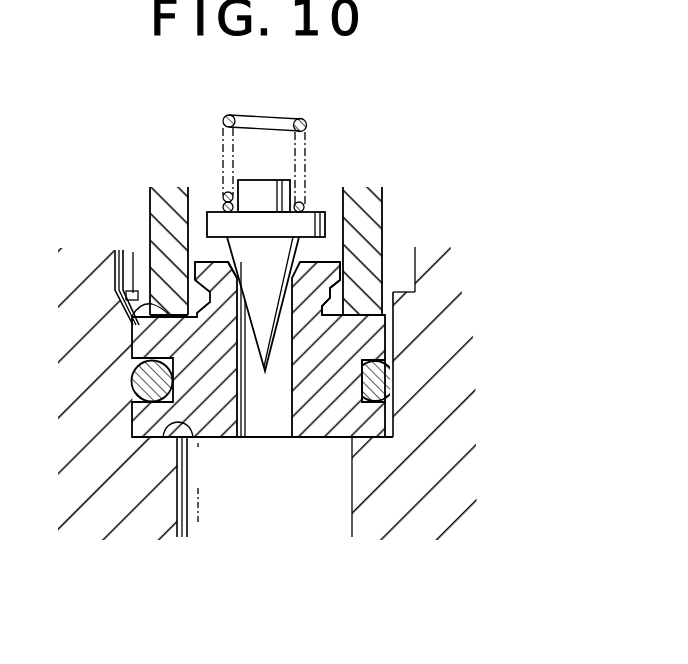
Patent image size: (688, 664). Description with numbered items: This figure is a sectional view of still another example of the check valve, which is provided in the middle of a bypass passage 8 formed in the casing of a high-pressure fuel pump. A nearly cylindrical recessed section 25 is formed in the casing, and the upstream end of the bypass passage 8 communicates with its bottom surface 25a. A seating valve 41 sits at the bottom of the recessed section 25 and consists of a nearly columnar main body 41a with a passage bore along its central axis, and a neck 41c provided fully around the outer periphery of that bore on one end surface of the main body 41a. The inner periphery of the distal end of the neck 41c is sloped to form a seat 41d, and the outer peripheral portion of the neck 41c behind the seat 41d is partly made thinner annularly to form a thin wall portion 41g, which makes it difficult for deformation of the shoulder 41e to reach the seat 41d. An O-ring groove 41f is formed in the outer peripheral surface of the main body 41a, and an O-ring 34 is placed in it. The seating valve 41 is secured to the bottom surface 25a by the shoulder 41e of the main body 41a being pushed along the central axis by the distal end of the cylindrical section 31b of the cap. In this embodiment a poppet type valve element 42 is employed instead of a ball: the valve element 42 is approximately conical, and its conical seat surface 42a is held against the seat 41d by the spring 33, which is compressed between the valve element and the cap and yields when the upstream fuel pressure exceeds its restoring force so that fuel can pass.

The bypass passage 8 is at (203, 522).
The recessed section 25 is at (122, 238).
The bottom surface 25a is at (195, 443).
The cylindrical section 31b is at (383, 195).
The spring 33 is at (226, 121).
The O-ring 34 is at (392, 388).
The seating valve 41 is at (328, 444).
The main body 41a is at (393, 428).
The neck 41c is at (207, 270).
The seat 41d is at (245, 265).
The shoulder 41e is at (130, 317).
The O-ring groove 41f is at (395, 377).
The thin wall portion 41g is at (332, 300).
The poppet type valve element 42 is at (322, 212).
The conical seat surface 42a is at (252, 378).